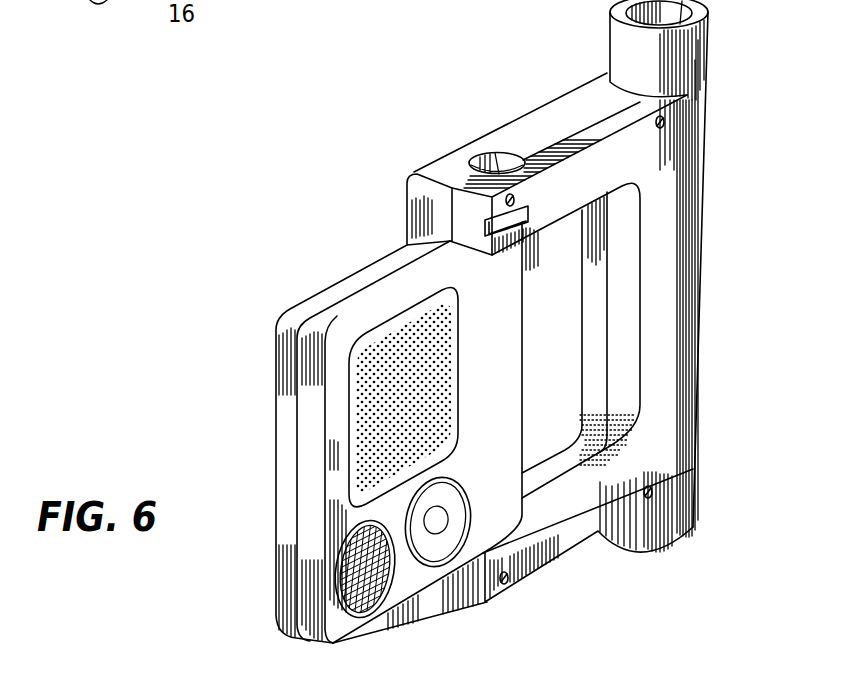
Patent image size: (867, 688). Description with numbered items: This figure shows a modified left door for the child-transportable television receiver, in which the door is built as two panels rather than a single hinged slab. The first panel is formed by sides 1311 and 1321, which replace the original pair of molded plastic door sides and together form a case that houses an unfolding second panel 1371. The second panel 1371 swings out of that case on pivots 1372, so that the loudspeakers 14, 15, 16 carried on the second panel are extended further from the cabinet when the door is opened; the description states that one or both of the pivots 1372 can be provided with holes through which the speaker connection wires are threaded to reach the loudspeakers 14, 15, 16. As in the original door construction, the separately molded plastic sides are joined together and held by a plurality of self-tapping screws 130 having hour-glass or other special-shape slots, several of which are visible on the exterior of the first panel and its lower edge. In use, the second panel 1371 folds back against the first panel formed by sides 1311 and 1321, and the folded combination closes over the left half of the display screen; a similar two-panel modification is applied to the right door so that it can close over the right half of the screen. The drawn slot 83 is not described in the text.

The loudspeaker 14 is at (430, 567).
The loudspeaker 15 is at (360, 441).
The loudspeaker 16 is at (358, 613).
The slot 83 is at (532, 213).
The self-tapping screw 130 is at (508, 199).
The side of first panel 1311 is at (650, 104).
The side of first panel 1321 is at (566, 146).
The second panel 1371 is at (365, 434).
The pivot 1372 is at (477, 157).